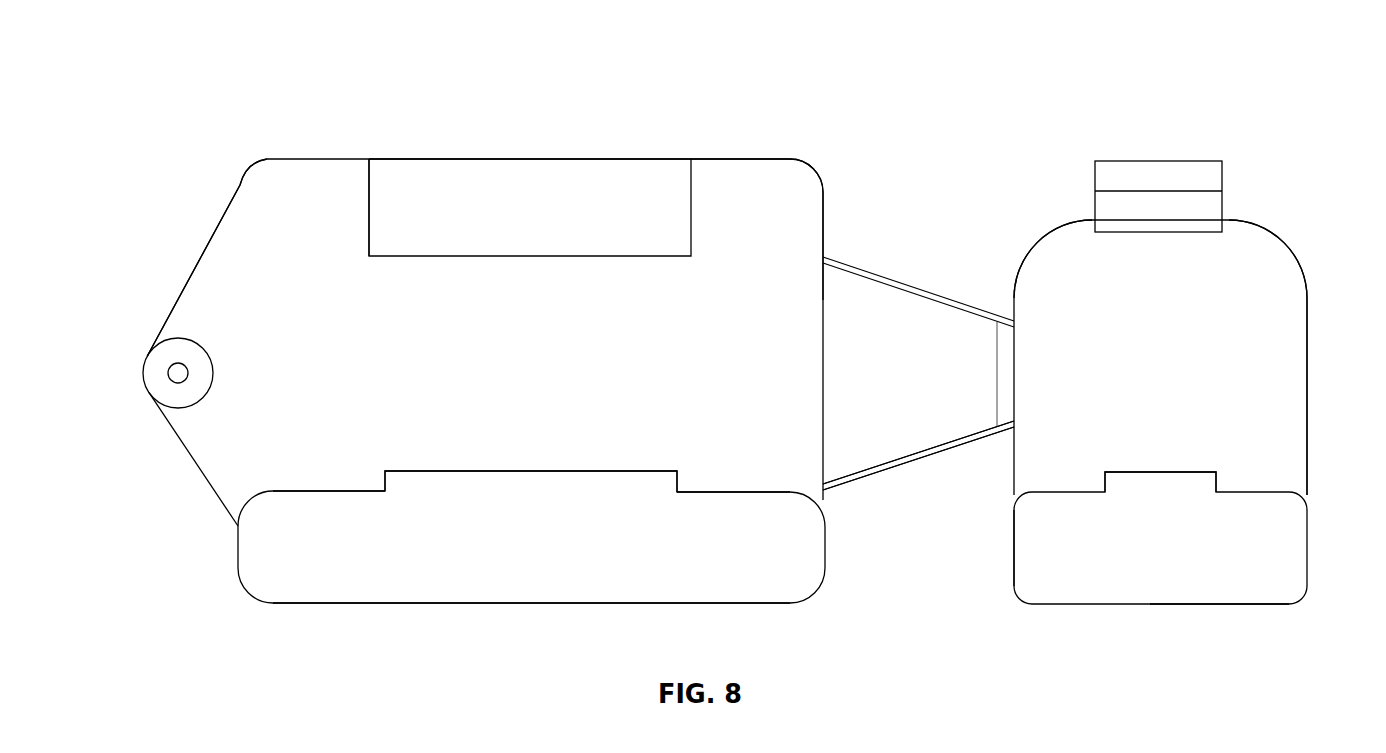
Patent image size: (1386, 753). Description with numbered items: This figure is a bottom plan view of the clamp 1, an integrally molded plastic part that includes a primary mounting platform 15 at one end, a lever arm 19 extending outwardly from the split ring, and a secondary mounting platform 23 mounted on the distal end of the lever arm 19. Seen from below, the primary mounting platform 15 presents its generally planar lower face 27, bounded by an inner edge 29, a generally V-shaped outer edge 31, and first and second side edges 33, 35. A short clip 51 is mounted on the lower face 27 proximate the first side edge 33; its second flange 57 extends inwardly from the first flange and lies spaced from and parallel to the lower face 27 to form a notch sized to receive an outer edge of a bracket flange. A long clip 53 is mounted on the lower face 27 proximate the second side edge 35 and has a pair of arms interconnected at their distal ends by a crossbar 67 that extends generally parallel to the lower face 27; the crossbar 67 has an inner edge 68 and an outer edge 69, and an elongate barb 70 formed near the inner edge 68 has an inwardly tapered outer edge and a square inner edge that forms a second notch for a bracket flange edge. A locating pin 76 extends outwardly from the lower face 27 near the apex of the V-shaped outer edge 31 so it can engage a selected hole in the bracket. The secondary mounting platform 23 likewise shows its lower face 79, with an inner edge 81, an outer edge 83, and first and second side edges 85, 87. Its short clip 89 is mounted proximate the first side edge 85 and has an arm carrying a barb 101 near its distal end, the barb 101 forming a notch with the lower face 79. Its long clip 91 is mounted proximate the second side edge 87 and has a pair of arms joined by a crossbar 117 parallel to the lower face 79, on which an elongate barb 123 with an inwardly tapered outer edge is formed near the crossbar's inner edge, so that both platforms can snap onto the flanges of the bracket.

The clamp 1 is at (258, 76).
The primary mounting platform 15 is at (298, 158).
The lever arm 19 is at (934, 306).
The secondary mounting platform 23 is at (1046, 244).
The lower face 27 is at (702, 357).
The inner edge 29 is at (826, 227).
The outer edge 31 is at (176, 300).
The first side edge 33 is at (530, 158).
The second side edge 35 is at (636, 604).
The short clip 51 is at (368, 212).
The long clip 53 is at (304, 490).
The second flange 57 is at (542, 211).
The crossbar 67 is at (554, 539).
The inner edge 68 is at (717, 491).
The outer edge 69 is at (394, 604).
The elongate barb 70 is at (518, 470).
The locating pin 76 is at (143, 378).
The lower face 79 is at (1146, 359).
The inner edge 81 is at (1012, 460).
The outer edge 83 is at (1310, 402).
The first side edge 85 is at (1246, 222).
The second side edge 87 is at (1228, 605).
The short clip 89 is at (1158, 160).
The long clip 91 is at (1020, 566).
The barb 101 is at (1152, 234).
The crossbar 117 is at (1185, 539).
The elongate barb 123 is at (1158, 471).